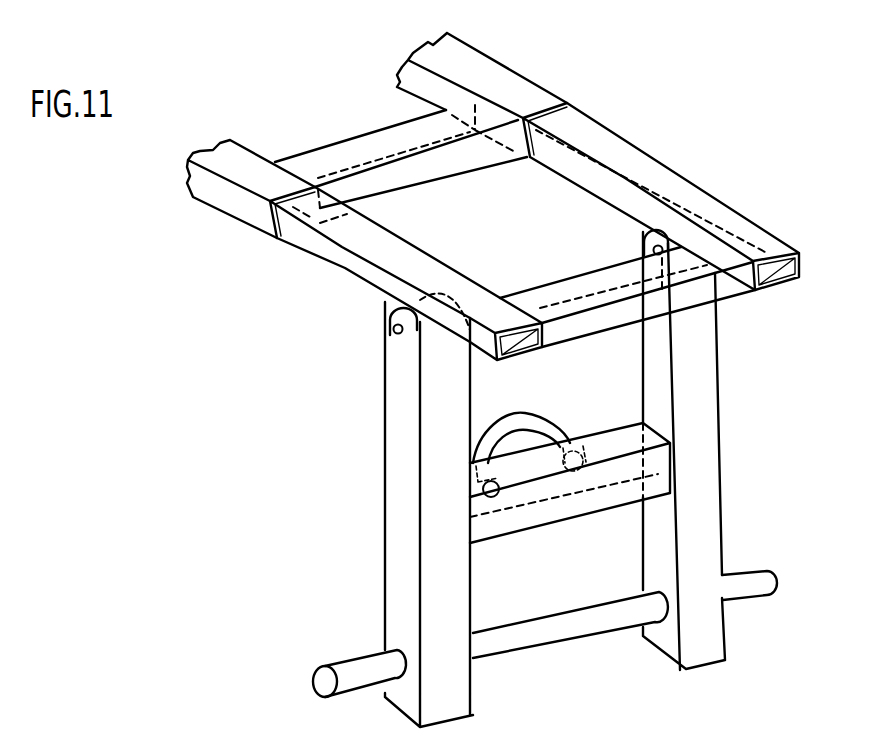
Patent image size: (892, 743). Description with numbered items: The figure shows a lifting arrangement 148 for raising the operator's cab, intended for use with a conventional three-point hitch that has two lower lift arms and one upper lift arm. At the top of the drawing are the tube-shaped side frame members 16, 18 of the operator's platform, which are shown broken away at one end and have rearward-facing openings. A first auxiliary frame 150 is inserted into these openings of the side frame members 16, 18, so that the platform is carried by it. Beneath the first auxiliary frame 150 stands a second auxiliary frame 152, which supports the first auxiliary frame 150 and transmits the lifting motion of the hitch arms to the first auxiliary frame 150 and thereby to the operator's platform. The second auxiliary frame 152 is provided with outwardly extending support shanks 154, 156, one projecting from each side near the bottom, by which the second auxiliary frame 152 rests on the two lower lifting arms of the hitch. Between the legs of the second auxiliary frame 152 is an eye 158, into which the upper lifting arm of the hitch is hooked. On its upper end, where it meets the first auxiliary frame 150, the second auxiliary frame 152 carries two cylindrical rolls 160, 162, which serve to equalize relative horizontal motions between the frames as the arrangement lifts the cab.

The side frame member 16 is at (227, 162).
The side frame member 18 is at (487, 63).
The lifting arrangement 148 is at (357, 385).
The first auxiliary frame 150 is at (613, 153).
The second auxiliary frame 152 is at (700, 510).
The support shank 154 is at (352, 668).
The support shank 156 is at (747, 580).
The eye 158 is at (478, 437).
The cylindrical roll 160 is at (390, 316).
The cylindrical roll 162 is at (670, 233).